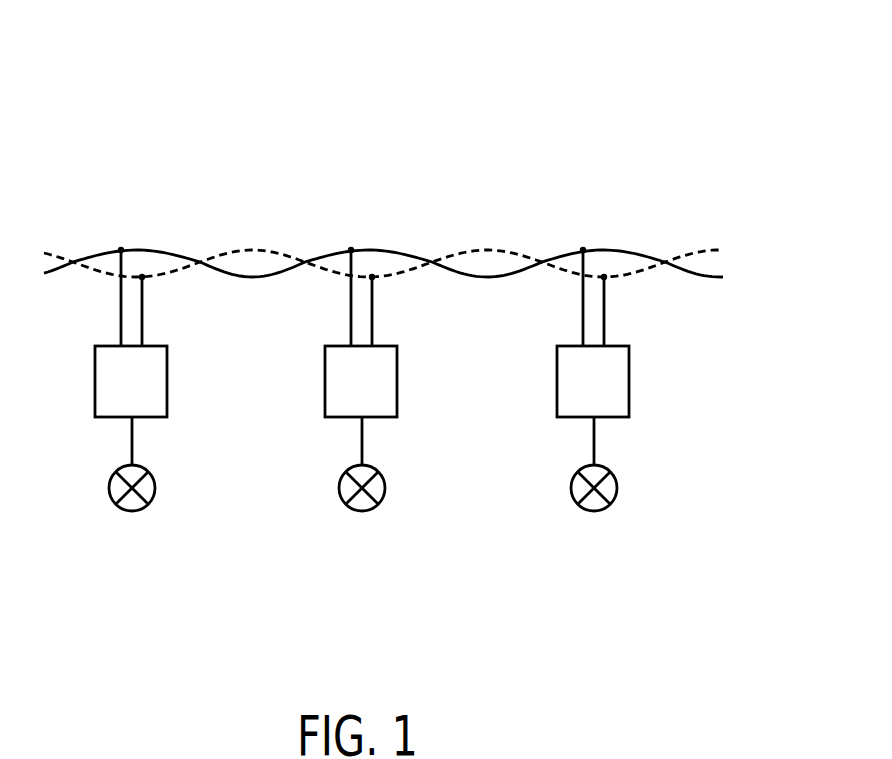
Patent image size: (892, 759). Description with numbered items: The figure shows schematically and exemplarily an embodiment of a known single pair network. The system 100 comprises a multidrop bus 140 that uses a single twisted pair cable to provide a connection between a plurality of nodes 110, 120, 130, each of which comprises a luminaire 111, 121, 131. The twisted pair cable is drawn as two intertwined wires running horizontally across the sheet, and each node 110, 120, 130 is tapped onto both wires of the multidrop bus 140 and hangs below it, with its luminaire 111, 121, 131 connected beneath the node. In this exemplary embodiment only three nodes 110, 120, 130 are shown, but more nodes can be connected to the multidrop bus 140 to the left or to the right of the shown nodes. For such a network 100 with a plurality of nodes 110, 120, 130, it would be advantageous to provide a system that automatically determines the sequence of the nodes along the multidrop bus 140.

The system 100 is at (188, 96).
The node 110 is at (97, 418).
The luminaire 111 is at (140, 510).
The node 120 is at (327, 418).
The luminaire 121 is at (370, 510).
The node 130 is at (559, 418).
The luminaire 131 is at (602, 510).
The multidrop bus 140 is at (612, 250).